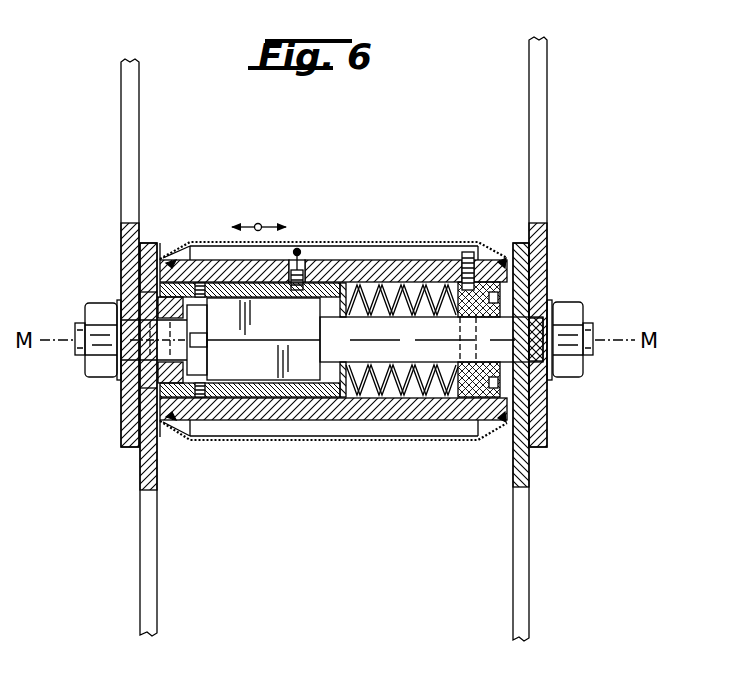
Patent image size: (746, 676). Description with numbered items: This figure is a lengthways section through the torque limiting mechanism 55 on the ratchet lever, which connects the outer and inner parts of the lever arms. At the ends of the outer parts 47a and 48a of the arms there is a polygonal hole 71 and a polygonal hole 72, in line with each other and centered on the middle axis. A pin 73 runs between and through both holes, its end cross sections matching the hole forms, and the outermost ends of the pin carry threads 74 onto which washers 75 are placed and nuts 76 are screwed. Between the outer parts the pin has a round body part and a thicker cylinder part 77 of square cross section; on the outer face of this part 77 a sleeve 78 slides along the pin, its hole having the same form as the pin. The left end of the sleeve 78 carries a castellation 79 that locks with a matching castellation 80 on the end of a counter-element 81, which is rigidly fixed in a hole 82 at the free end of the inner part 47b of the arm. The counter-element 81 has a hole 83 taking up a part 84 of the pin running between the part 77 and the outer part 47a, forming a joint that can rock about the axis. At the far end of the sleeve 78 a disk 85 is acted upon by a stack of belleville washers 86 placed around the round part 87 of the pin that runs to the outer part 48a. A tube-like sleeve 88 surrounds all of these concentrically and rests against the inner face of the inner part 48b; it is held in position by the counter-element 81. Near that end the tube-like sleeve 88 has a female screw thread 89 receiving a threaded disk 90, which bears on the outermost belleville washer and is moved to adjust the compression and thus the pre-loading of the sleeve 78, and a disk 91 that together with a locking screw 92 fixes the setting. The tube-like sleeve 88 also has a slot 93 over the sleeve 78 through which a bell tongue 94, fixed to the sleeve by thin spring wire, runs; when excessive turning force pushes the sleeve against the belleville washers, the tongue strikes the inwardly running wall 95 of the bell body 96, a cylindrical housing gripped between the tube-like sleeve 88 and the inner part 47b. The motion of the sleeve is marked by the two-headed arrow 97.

The outer part of arm 47a is at (126, 148).
The inner part of arm 47b is at (143, 540).
The outer part of arm 48a is at (548, 148).
The inner part of arm 48b is at (525, 534).
The torque limiting mechanism 55 is at (273, 458).
The polygonal hole 71 is at (123, 383).
The polygonal hole 72 is at (538, 378).
The pin 73 is at (598, 320).
The threads 74 is at (82, 346).
The washers 75 is at (119, 302).
The nuts 76 is at (100, 310).
The part of the pin 77 is at (271, 329).
The sleeve 78 is at (250, 403).
The castellation 79 is at (202, 398).
The castellation 80 is at (200, 288).
The counter-element 81 is at (150, 386).
The hole 82 is at (158, 390).
The hole 83 is at (165, 322).
The part of the pin 84 is at (180, 352).
The disk 85 is at (343, 398).
The belleville washers 86 is at (420, 392).
The part of the pin 87 is at (391, 344).
The tube-like sleeve 88 is at (310, 400).
The female screw thread 89 is at (492, 430).
The disk 90 is at (458, 282).
The disk 91 is at (490, 272).
The locking screw 92 is at (469, 258).
The slot 93 is at (308, 262).
The bell tongue 94 is at (302, 270).
The inwardly running wall 95 is at (298, 249).
The bell body 96 is at (398, 242).
The adjustment range 97 is at (258, 288).